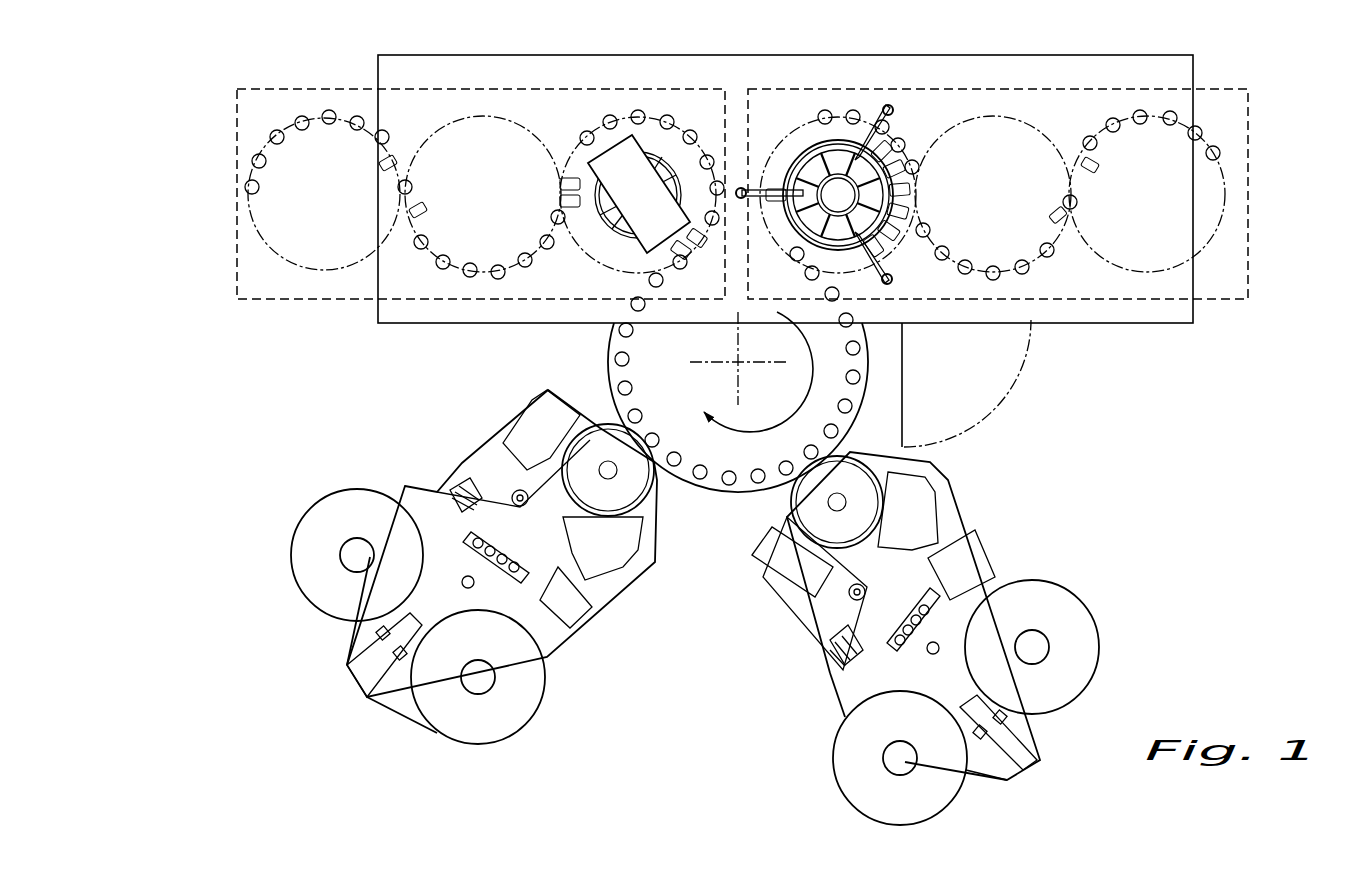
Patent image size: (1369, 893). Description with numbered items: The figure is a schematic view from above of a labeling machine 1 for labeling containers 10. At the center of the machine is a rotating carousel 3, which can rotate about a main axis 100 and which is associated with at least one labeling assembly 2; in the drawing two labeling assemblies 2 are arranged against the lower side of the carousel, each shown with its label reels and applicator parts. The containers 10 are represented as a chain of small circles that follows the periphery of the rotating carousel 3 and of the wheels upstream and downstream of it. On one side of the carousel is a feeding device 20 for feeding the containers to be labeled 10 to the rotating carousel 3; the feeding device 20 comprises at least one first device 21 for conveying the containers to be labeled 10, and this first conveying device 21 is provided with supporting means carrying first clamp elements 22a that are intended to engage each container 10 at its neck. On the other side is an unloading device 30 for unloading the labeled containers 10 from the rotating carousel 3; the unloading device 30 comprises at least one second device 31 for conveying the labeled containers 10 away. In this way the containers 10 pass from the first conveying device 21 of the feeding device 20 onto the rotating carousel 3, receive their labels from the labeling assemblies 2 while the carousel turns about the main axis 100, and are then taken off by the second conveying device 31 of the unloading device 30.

The labeling machine 1 is at (680, 672).
The labeling assembly 2 is at (592, 631).
The rotating carousel 3 is at (868, 397).
The containers 10 is at (275, 131).
The feeding device 20 is at (979, 88).
The first conveying device 21 is at (869, 120).
The first clamp elements 22a is at (782, 146).
The unloading device 30 is at (468, 86).
The second conveying device 31 is at (248, 144).
The main axis 100 is at (736, 365).